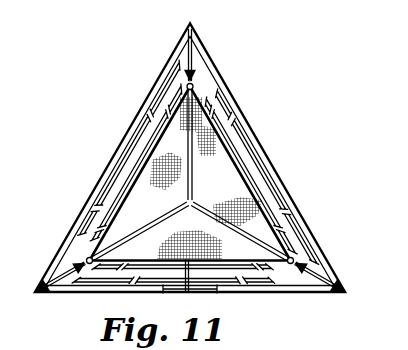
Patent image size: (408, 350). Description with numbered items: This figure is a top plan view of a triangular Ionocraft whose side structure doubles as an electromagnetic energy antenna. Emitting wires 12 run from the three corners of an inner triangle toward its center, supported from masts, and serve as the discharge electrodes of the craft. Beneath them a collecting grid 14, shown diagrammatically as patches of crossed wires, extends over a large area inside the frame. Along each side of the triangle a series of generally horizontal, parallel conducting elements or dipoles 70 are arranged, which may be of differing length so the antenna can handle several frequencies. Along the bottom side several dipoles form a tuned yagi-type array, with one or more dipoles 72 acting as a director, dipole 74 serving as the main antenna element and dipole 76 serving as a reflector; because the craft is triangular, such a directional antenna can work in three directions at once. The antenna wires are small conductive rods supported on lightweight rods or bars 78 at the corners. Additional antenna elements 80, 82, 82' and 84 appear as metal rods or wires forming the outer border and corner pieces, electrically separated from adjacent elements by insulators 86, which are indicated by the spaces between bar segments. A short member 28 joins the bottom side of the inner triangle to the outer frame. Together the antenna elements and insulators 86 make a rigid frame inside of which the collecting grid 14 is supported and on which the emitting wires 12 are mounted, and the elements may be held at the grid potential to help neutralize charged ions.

The emitting wires 12 is at (152, 222).
The collecting grid 14 is at (214, 150).
The vertical member 28 is at (180, 289).
The dipoles 70 is at (148, 96).
The director dipole 72 is at (190, 290).
The main antenna element dipole 74 is at (223, 288).
The reflector dipole 76 is at (222, 268).
The rods or bars 78 is at (64, 272).
The antenna element 80 is at (222, 70).
The antenna element 82 is at (183, 177).
The frame member 82' is at (273, 293).
The antenna element 84 is at (212, 53).
The insulators 86 is at (174, 60).